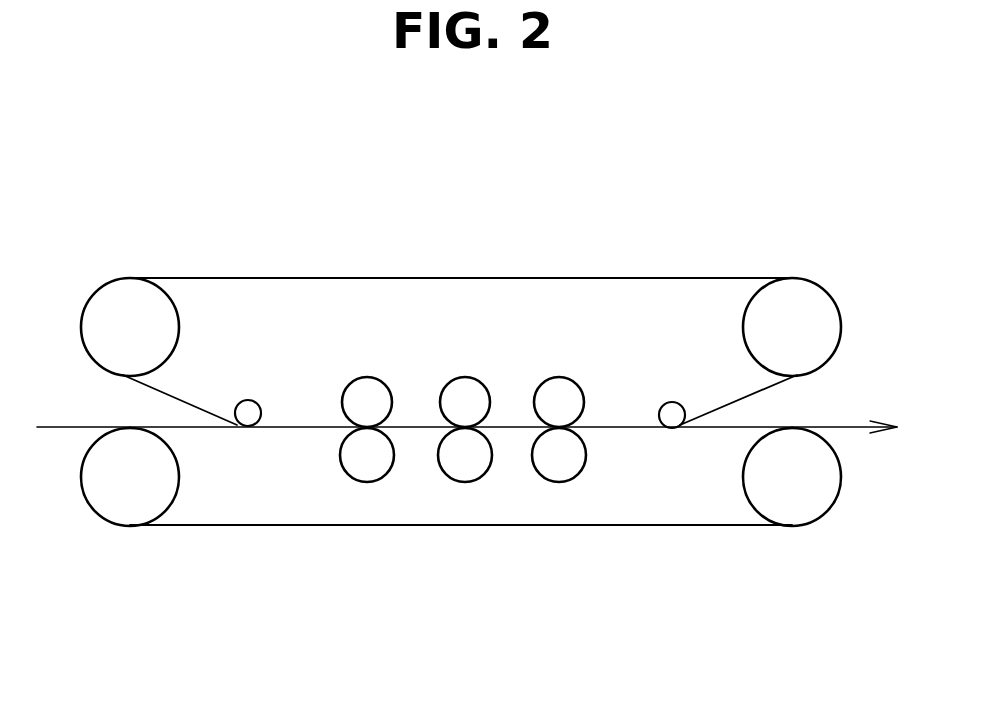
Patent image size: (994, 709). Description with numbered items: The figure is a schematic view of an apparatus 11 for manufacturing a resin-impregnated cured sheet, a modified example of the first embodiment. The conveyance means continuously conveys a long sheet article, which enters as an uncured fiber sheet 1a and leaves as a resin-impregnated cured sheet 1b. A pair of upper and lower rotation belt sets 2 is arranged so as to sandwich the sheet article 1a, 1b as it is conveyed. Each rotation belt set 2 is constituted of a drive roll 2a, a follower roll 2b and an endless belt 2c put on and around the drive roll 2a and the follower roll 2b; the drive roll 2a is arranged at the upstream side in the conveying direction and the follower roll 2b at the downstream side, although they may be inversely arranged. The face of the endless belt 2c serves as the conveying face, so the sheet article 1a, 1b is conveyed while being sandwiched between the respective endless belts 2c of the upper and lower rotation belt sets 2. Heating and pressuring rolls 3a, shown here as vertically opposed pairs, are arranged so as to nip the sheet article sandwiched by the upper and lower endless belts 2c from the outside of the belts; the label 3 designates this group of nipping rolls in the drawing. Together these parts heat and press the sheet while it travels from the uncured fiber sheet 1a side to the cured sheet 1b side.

The apparatus for manufacturing a resin-impregnated cured sheet 11 is at (563, 228).
The rotation belt set 2 is at (753, 257).
The drive roll 2a is at (112, 295).
The follower roll 2b is at (805, 290).
The endless belt 2c is at (257, 278).
The roller pair 3 is at (568, 368).
The heating and pressuring roll 3a is at (585, 403).
The uncured fiber sheet 1a is at (62, 440).
The resin-impregnated cured sheet 1b is at (830, 427).